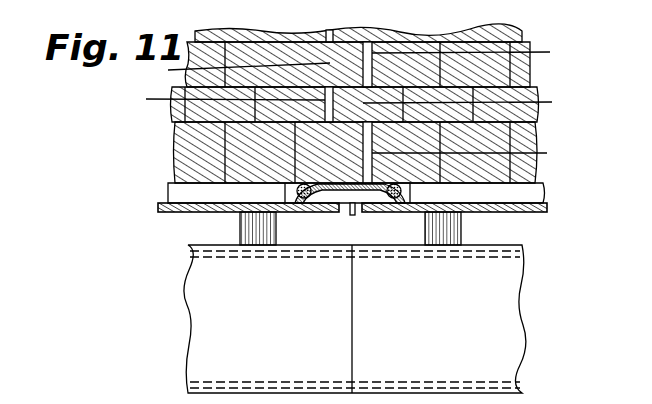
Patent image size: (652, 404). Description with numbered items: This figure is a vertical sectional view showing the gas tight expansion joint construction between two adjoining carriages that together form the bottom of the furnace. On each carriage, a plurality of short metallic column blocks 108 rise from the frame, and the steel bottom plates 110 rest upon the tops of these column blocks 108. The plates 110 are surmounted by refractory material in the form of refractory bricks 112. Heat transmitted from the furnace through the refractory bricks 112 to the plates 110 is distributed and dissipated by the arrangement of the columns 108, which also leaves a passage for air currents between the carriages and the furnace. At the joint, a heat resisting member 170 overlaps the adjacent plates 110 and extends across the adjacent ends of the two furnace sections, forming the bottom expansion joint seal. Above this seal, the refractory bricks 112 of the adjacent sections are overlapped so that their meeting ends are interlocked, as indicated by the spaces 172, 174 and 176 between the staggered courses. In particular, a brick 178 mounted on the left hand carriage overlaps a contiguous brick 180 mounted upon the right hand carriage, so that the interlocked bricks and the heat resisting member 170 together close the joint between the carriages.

The refractory bricks 112 is at (177, 146).
The brick 178 is at (230, 72).
The space 172 is at (486, 54).
The space 174 is at (212, 100).
The brick 180 is at (481, 104).
The space 176 is at (483, 156).
The heat resisting member 170 is at (352, 215).
The steel bottom plate 110 is at (158, 207).
The column blocks 108 is at (255, 226).